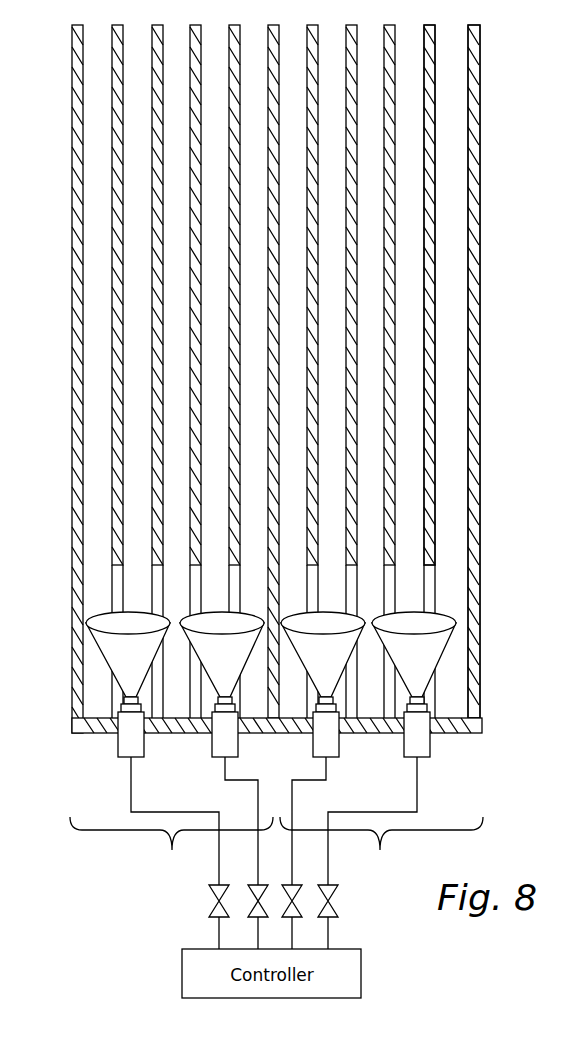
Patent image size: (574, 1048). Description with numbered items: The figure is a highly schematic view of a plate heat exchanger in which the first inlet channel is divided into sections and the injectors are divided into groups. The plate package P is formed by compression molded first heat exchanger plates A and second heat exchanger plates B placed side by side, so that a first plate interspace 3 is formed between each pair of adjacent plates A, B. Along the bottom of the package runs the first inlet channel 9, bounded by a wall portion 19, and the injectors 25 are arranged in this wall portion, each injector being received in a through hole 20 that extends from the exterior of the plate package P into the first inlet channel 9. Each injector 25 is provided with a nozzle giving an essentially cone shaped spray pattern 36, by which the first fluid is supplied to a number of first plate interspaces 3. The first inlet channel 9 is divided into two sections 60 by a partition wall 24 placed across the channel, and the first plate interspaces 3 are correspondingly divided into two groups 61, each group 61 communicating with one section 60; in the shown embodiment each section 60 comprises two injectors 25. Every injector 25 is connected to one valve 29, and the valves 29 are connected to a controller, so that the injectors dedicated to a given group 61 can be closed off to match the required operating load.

The first plate interspace 3 is at (415, 280).
The first inlet channel 9 is at (472, 638).
The wall portion 19 is at (465, 737).
The through hole 20 is at (342, 740).
The partition wall 24 is at (262, 700).
The injector 25 is at (118, 748).
The valve 29 is at (334, 905).
The cone shaped spray pattern 36 is at (118, 632).
The section 60 is at (171, 821).
The group 61 is at (381, 821).
The first heat exchanger plate A is at (430, 202).
The second heat exchanger plate B is at (387, 140).
The plate package P is at (496, 459).